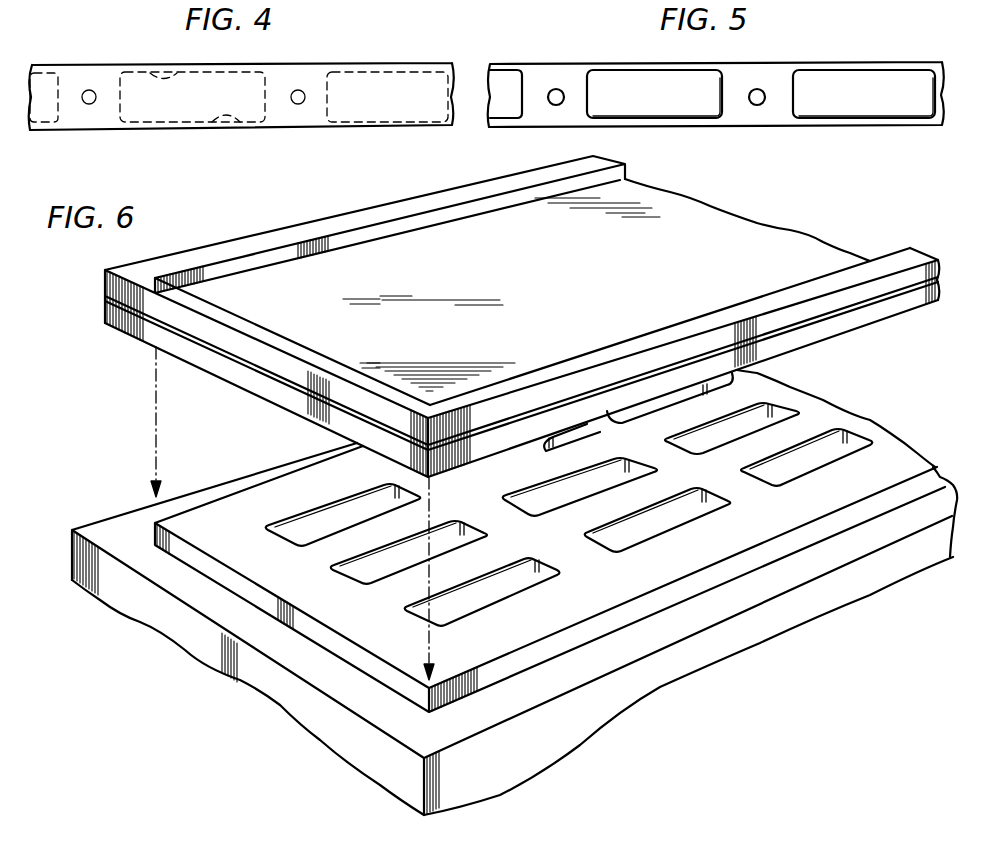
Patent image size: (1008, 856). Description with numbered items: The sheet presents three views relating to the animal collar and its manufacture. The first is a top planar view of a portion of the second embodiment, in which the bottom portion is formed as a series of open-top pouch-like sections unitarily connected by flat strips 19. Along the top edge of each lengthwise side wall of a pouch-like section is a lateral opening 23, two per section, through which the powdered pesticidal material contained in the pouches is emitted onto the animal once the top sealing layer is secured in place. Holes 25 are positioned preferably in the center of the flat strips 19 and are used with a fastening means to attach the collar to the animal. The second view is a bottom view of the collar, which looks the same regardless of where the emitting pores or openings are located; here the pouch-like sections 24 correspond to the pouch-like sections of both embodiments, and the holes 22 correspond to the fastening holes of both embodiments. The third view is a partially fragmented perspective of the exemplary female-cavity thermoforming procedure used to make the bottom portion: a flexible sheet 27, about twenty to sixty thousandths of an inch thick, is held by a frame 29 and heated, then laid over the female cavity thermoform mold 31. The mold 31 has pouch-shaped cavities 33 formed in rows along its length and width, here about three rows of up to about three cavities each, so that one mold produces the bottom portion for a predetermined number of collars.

In FIG. 4, the flat strips 19 is at (86, 130).
In FIG. 5, the holes 22 is at (556, 88).
In FIG. 4, the lateral opening 23 is at (190, 64).
In FIG. 5, the pouch-like sections 24 is at (633, 85).
In FIG. 4, the holes 25 is at (92, 90).
In FIG. 6, the flexible sheet 27 is at (508, 285).
In FIG. 6, the frame 29 is at (137, 270).
In FIG. 6, the female cavity thermoform mold 31 is at (625, 615).
In FIG. 6, the pouch-shaped cavities 33 is at (407, 571).